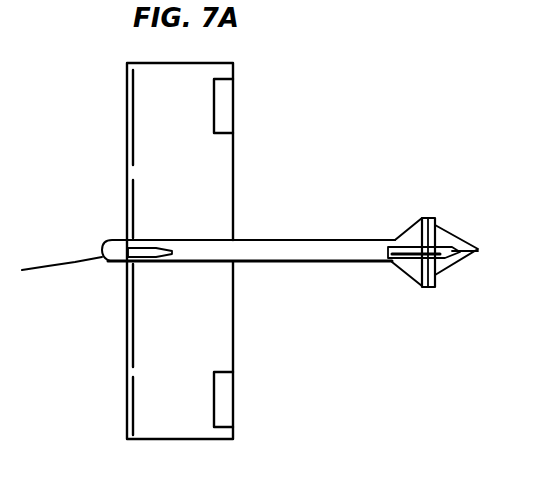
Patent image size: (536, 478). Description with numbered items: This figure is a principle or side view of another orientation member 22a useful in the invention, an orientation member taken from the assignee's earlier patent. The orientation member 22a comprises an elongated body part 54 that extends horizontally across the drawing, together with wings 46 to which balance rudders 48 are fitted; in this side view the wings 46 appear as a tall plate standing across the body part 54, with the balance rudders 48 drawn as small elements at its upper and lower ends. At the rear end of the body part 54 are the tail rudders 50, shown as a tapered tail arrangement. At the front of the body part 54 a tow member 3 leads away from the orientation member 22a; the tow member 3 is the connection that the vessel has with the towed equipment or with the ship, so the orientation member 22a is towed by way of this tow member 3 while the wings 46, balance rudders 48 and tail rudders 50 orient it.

The orientation member 22a is at (88, 130).
The wings 46 is at (221, 175).
The balance rudders 48 is at (225, 98).
The tow member 3 is at (46, 265).
The body part 54 is at (332, 240).
The tail rudders 50 is at (478, 249).